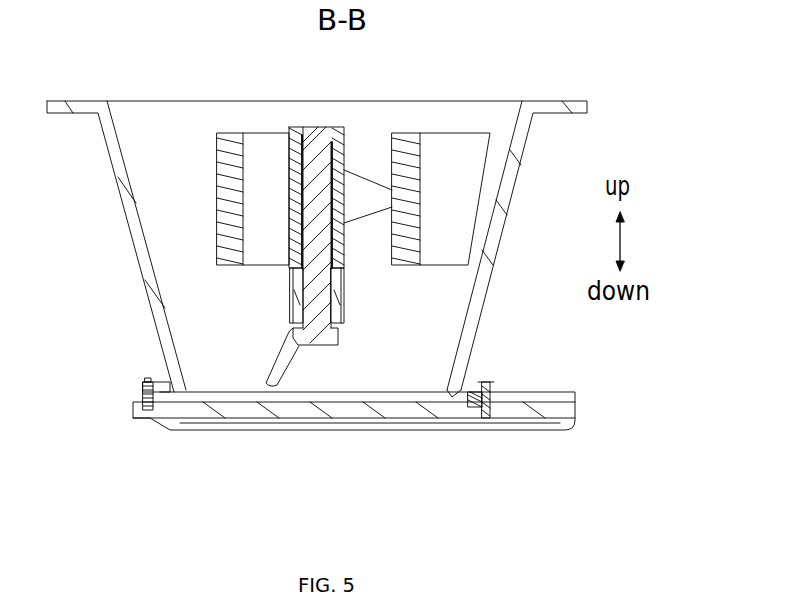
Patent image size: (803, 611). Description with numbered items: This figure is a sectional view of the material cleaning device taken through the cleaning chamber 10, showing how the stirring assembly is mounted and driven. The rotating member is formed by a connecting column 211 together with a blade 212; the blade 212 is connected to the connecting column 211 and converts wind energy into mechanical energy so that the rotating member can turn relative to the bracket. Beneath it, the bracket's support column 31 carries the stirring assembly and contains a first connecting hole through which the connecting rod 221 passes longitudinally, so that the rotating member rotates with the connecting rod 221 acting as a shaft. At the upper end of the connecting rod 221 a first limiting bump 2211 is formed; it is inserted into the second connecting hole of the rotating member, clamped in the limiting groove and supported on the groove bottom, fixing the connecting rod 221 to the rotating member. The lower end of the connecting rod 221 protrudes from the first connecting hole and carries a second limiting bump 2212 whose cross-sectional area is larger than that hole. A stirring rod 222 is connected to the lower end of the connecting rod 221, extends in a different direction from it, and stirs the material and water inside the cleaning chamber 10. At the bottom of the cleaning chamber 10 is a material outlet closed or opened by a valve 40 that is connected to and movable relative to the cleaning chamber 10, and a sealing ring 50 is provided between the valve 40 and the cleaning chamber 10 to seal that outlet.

The cleaning chamber 10 is at (483, 272).
The blade 212 is at (232, 198).
The connecting column 211 is at (298, 162).
The connecting rod 221 is at (318, 198).
The first limiting bump 2211 is at (305, 133).
The support column 31 is at (338, 283).
The second limiting bump 2212 is at (332, 335).
The stirring rod 222 is at (272, 367).
The valve 40 is at (312, 415).
The sealing ring 50 is at (485, 398).